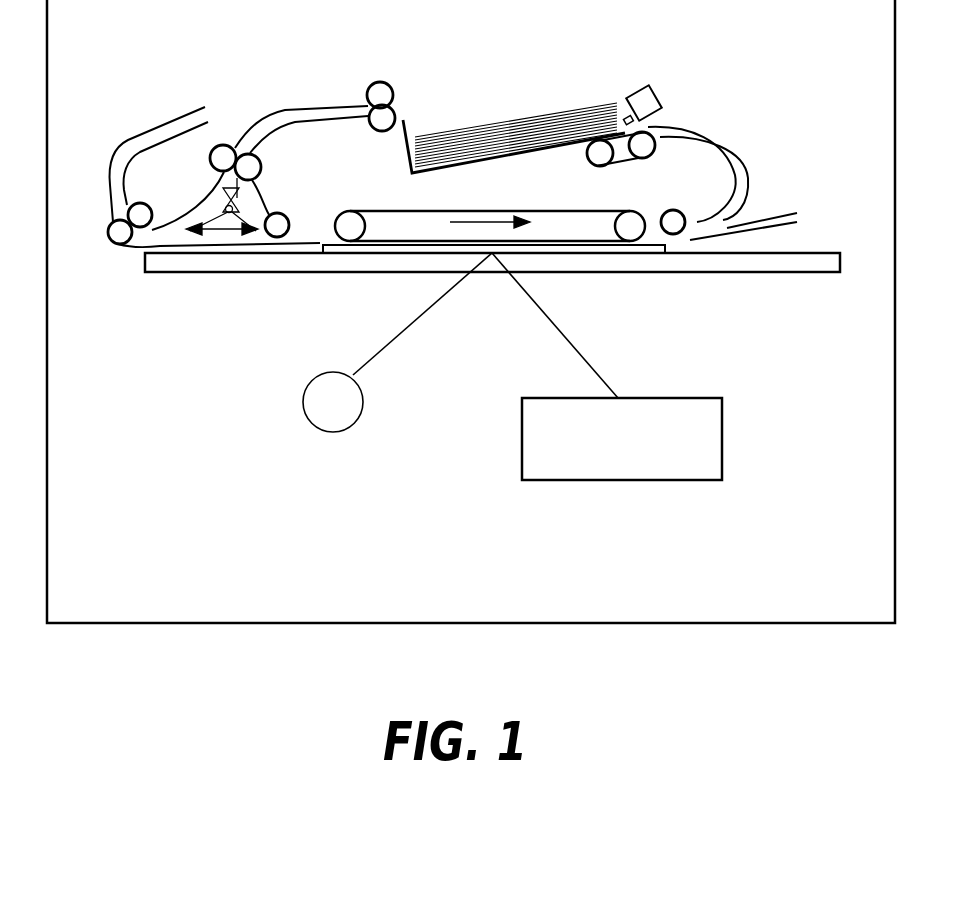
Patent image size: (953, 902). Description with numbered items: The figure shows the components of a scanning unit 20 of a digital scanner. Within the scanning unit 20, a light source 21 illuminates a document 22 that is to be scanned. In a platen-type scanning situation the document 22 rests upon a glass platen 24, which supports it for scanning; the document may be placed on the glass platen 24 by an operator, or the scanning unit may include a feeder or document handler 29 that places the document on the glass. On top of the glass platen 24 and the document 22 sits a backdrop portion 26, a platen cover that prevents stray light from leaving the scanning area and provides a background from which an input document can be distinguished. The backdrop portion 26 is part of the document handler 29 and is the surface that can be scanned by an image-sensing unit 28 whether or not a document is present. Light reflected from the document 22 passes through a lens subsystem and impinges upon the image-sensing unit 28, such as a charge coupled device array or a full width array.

The scanning unit 20 is at (366, 625).
The light source 21 is at (333, 432).
The document 22 is at (415, 245).
The glass platen 24 is at (282, 272).
The backdrop portion 26 is at (566, 237).
The image-sensing unit 28 is at (668, 398).
The document handler 29 is at (648, 84).